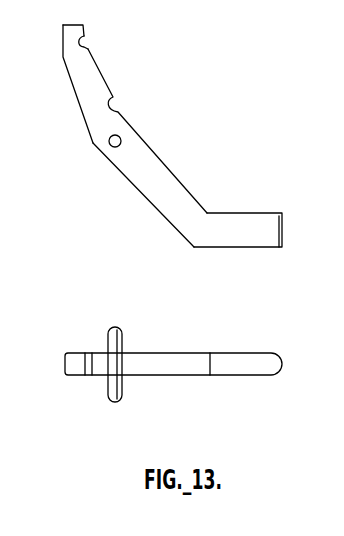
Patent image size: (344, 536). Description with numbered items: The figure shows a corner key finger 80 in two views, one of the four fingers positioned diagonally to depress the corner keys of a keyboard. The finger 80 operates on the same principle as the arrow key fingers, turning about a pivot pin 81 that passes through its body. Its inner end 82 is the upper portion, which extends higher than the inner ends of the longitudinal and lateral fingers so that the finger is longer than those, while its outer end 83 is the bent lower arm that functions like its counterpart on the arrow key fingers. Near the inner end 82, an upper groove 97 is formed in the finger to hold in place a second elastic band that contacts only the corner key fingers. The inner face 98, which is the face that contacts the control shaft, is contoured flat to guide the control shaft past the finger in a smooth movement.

The corner key finger 80 is at (236, 122).
The pivot pin 81 is at (120, 139).
The inner end 82 is at (73, 38).
The outer end 83 is at (249, 228).
The upper groove 97 is at (91, 46).
The inner face 98 is at (63, 41).